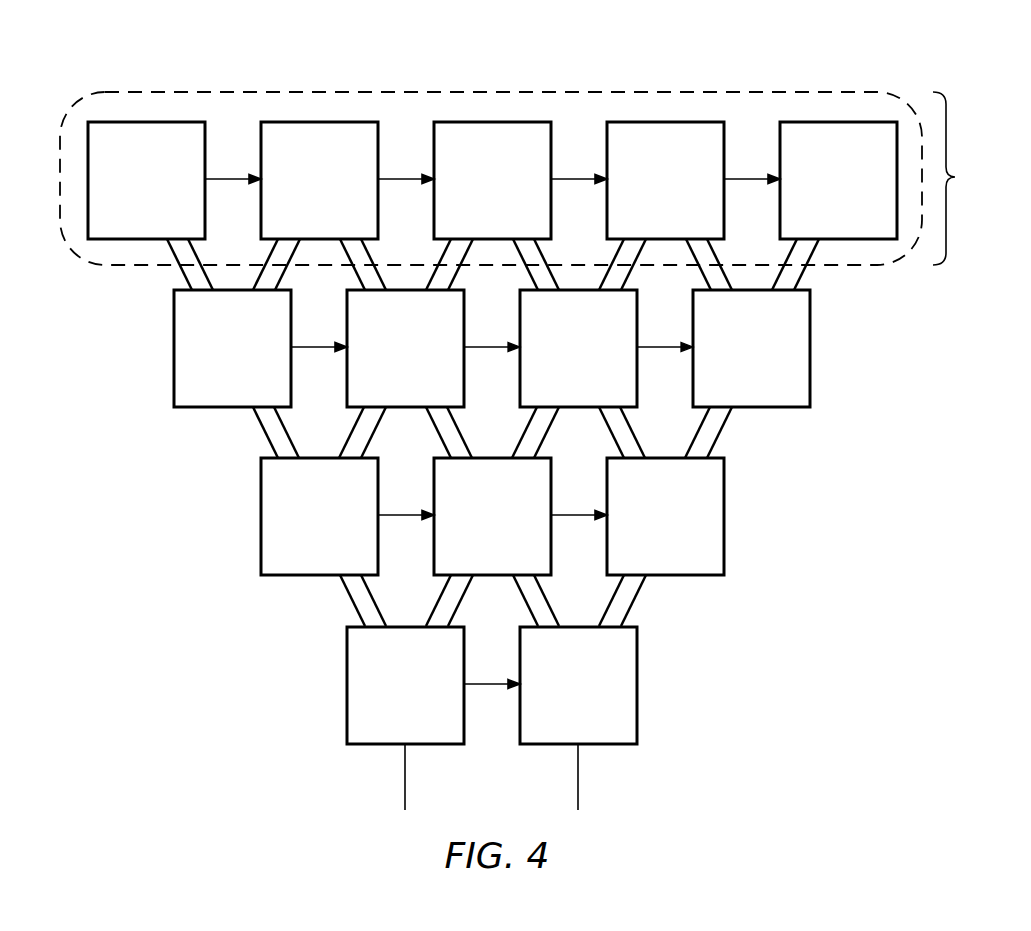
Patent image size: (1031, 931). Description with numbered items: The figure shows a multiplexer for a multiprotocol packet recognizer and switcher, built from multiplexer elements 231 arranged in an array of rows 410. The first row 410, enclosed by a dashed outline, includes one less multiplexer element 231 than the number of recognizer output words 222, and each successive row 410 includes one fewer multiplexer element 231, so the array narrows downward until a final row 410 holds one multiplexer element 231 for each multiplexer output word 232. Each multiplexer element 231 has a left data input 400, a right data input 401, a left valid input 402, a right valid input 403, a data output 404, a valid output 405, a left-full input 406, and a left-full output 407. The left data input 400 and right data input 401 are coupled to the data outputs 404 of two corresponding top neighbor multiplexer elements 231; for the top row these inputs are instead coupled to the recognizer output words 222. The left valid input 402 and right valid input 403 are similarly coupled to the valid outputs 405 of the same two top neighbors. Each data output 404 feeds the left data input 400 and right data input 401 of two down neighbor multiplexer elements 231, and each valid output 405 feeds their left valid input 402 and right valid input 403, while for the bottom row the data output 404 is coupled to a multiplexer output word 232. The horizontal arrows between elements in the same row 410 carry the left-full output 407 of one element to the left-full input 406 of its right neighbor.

The recognizer output word 222 is at (812, 91).
The row 410 is at (546, 178).
The multiplexer element 231 is at (802, 348).
The multiplexer output word 232 is at (578, 774).
The left data input 400 is at (700, 275).
The right data input 401 is at (800, 275).
The left valid input 402 is at (729, 280).
The right valid input 403 is at (787, 248).
The data output 404 is at (641, 447).
The valid output 405 is at (613, 445).
The left-full input 406 is at (483, 350).
The left-full output 407 is at (663, 350).